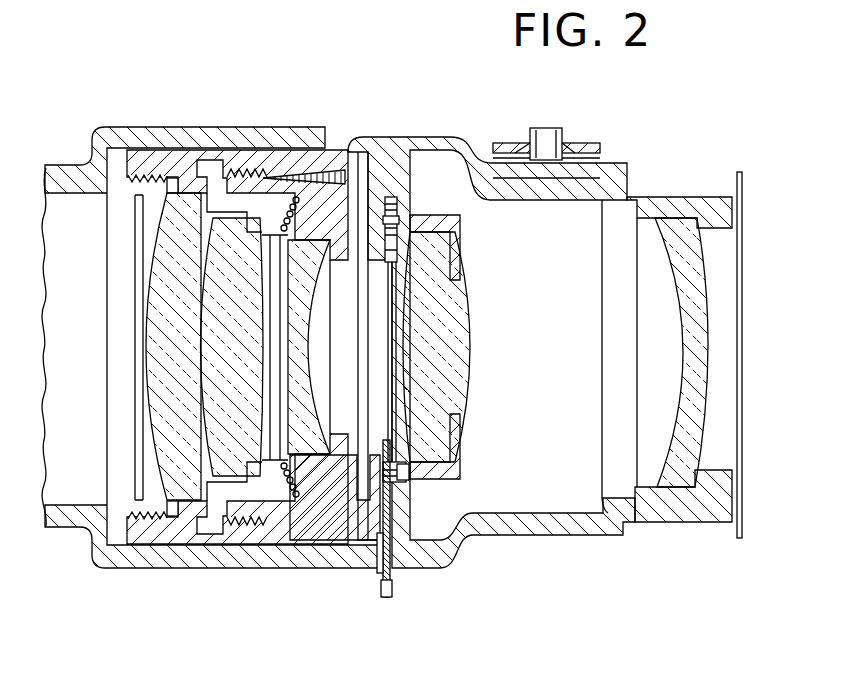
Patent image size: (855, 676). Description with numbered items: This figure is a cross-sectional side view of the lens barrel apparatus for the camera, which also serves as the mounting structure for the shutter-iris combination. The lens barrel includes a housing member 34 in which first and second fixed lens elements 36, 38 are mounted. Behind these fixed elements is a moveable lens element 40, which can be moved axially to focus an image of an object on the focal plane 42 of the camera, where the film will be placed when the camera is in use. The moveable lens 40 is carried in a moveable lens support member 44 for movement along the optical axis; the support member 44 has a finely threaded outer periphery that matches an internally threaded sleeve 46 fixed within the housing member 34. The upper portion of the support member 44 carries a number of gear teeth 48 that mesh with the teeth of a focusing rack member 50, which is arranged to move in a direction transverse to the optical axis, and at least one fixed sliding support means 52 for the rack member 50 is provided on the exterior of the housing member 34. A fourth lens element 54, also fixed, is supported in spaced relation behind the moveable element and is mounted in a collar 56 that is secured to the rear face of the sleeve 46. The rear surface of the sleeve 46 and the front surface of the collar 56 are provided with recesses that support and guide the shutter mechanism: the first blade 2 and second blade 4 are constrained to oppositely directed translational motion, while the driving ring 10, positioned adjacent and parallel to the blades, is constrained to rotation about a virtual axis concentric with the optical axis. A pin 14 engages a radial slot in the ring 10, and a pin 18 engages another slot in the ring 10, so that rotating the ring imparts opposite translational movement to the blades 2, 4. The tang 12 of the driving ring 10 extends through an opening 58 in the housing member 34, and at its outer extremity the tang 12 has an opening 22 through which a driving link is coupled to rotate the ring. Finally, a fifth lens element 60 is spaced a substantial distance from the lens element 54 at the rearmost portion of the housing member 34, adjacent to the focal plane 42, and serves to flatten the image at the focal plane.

The first blade 2 is at (397, 324).
The second blade 4 is at (391, 312).
The driving ring 10 is at (396, 203).
The tang 12 is at (386, 598).
The pin 14 is at (407, 470).
The pin 18 is at (399, 222).
The opening 22 is at (392, 586).
The housing member 34 is at (148, 568).
The first fixed lens element 36 is at (173, 346).
The second fixed lens element 38 is at (232, 347).
The moveable lens element 40 is at (308, 385).
The focal plane 42 is at (743, 180).
The moveable lens support member 44 is at (322, 545).
The internally threaded sleeve 46 is at (208, 542).
The gear teeth 48 is at (343, 176).
The focusing rack member 50 is at (356, 140).
The fixed sliding support means 52 is at (522, 148).
The fourth lens element 54 is at (452, 328).
The collar 56 is at (447, 228).
The opening 58 is at (378, 570).
The fifth lens element 60 is at (703, 375).